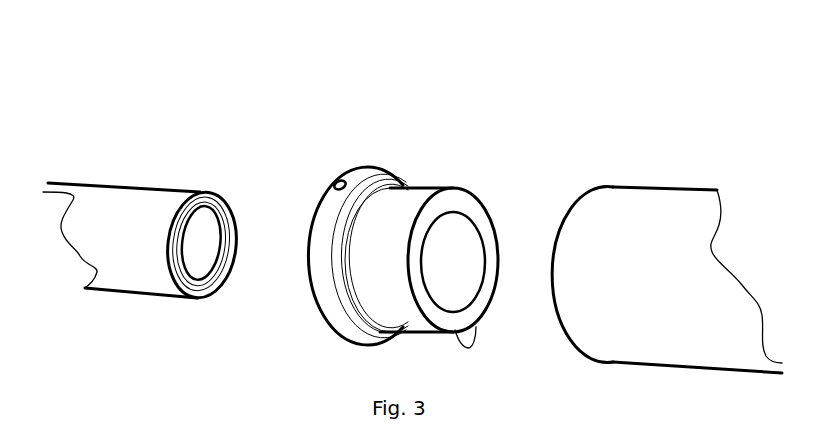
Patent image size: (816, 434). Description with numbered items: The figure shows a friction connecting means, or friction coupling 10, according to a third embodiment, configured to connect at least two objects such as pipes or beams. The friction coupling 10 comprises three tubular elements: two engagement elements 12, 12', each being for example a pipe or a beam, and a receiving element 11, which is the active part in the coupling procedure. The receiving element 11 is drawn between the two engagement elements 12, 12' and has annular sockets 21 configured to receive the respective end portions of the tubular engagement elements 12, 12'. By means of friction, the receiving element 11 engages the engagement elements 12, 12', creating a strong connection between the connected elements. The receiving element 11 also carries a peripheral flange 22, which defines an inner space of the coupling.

The friction coupling 10 is at (308, 105).
The receiving element 11 is at (437, 188).
The engagement element 12 is at (667, 239).
The engagement element 12' is at (142, 204).
The annular socket 21 is at (473, 327).
The peripheral flange 22 is at (360, 165).